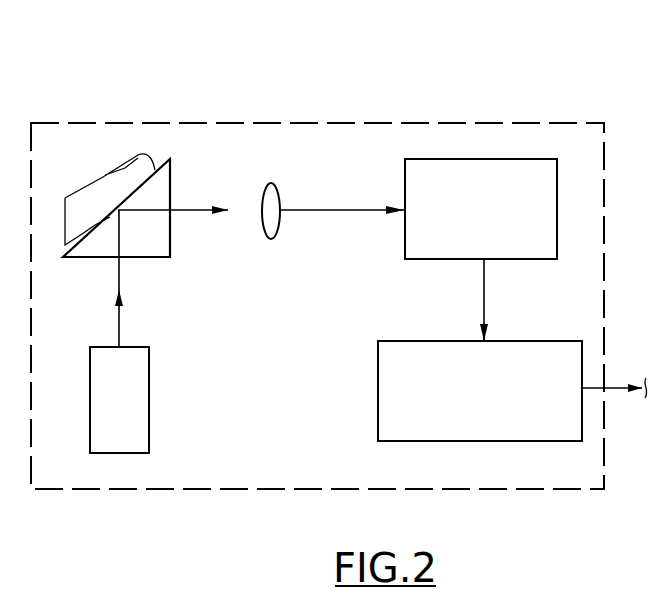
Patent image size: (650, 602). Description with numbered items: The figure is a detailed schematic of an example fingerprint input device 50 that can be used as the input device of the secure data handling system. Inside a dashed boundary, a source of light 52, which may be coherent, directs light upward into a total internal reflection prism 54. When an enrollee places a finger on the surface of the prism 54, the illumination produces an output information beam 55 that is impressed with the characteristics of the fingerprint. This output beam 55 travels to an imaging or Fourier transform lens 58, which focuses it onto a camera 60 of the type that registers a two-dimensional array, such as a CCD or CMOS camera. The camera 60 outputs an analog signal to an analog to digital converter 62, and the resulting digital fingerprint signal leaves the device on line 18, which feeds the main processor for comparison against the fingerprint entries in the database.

The fingerprint input device 50 is at (526, 87).
The source of light 52 is at (149, 402).
The total internal reflection prism 54 is at (160, 258).
The output information beam 55 is at (245, 208).
The imaging or Fourier transform lens 58 is at (280, 222).
The camera 60 is at (472, 159).
The analog to digital converter 62 is at (415, 341).
The line 18 is at (623, 382).